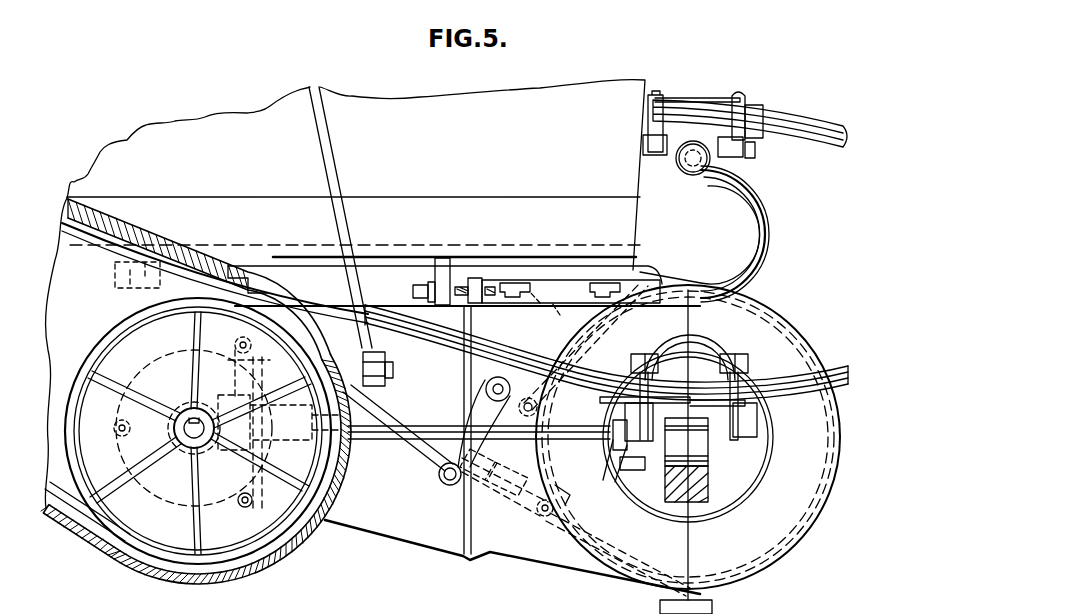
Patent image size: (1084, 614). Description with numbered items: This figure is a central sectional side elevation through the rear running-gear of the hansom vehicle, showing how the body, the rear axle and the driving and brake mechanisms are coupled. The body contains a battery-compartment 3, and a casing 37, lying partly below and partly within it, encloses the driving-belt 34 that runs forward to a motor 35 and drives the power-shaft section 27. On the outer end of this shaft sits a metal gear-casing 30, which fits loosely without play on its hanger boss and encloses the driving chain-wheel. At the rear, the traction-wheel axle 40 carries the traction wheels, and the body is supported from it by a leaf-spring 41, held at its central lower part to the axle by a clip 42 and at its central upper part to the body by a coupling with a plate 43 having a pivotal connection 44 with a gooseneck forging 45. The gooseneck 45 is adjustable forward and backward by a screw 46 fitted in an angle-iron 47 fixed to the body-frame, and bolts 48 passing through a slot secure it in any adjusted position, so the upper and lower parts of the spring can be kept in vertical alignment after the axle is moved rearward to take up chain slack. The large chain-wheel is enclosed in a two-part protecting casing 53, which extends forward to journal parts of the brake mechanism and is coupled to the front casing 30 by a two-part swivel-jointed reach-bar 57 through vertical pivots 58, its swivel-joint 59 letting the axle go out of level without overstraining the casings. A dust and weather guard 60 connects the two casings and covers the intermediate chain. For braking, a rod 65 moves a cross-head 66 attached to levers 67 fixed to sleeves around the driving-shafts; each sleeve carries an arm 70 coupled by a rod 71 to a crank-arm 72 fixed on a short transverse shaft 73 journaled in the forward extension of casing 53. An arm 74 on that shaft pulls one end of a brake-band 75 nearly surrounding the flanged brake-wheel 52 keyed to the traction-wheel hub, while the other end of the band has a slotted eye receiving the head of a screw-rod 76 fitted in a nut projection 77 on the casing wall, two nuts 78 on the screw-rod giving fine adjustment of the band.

The battery-compartment 3 is at (353, 294).
The power-shaft section 27 is at (186, 447).
The gear-casing 30 is at (163, 382).
The driving-belt 34 is at (92, 245).
The motor 35 is at (104, 340).
The belt-casing 37 is at (140, 231).
The traction-wheel axle 40 is at (708, 476).
The leaf-spring 41 is at (841, 132).
The clip 42 is at (718, 386).
The plate 43 is at (680, 145).
The pivotal connection 44 is at (683, 176).
The gooseneck forging 45 is at (742, 261).
The screw 46 is at (457, 290).
The angle-iron 47 is at (540, 270).
The bolt 48 is at (535, 293).
The brake-wheel 52 is at (563, 493).
The gear-casing 53 is at (493, 545).
The reach-bar 57 is at (405, 428).
The vertical pivot 58 is at (199, 440).
The swivel-joint 59 is at (279, 422).
The dust and weather guard 60 is at (512, 548).
The rod 65 is at (325, 160).
The cross-head 66 is at (390, 369).
The lever 67 is at (348, 376).
The arm 70 is at (243, 353).
The rod 71 is at (403, 443).
The crank-arm 72 is at (478, 420).
The transverse shaft 73 is at (486, 381).
The arm 74 is at (527, 396).
The brake-band 75 is at (547, 388).
The screw-rod 76 is at (532, 497).
The nut projection 77 is at (512, 465).
The nut 78 is at (478, 480).